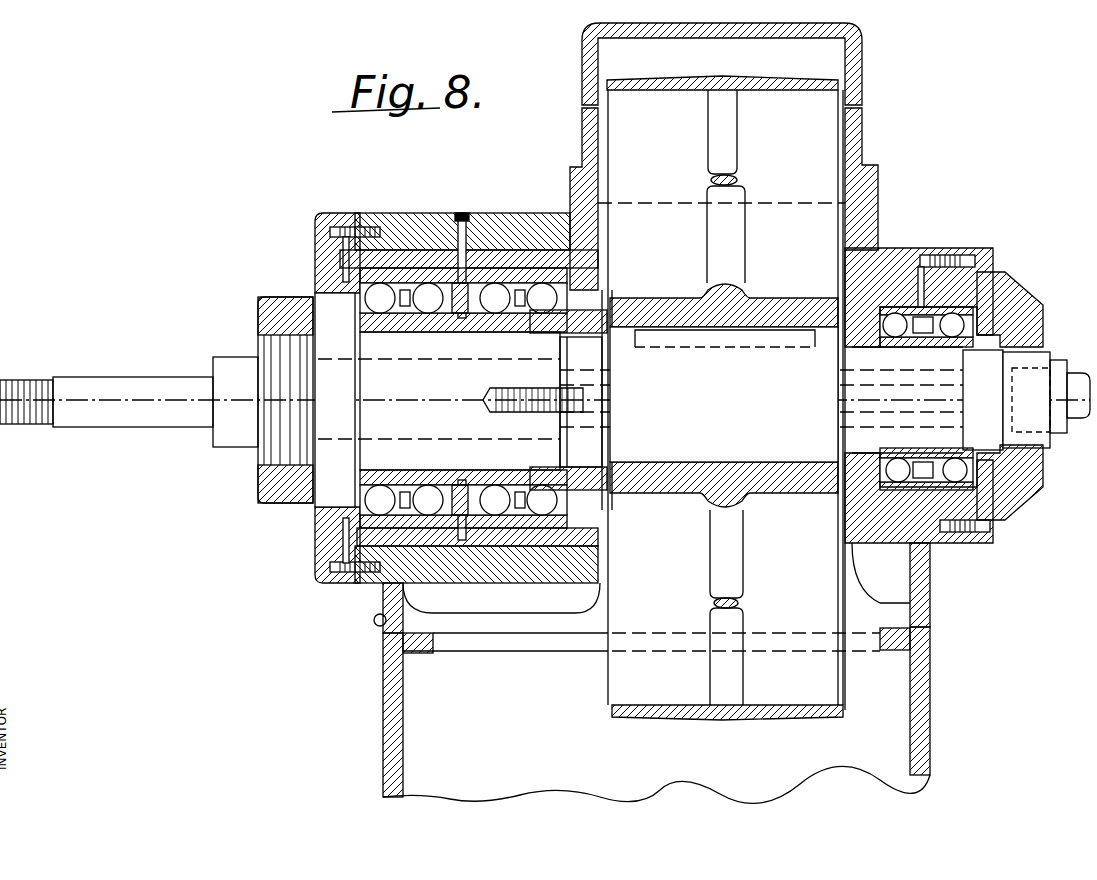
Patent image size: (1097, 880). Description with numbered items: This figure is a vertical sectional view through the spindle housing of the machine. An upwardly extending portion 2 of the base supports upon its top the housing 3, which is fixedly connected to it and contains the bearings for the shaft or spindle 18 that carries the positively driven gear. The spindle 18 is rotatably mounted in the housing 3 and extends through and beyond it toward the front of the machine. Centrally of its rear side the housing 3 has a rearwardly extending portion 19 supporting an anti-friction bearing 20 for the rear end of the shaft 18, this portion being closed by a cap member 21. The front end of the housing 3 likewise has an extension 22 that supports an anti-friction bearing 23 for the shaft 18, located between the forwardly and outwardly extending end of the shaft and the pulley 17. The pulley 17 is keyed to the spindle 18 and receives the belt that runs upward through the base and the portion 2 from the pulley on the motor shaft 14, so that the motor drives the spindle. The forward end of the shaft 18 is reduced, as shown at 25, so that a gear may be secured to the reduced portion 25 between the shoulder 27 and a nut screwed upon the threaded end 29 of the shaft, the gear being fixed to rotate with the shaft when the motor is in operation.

The portion 2 is at (930, 726).
The housing 3 is at (862, 150).
The motor shaft 14 is at (316, 261).
The pulley 17 is at (630, 677).
The shaft or spindle 18 is at (704, 400).
The rearwardly extending portion 19 is at (900, 250).
The anti-friction bearing 20 is at (912, 398).
The cap member 21 is at (1026, 296).
The extension 22 is at (500, 216).
The anti-friction bearing 23 is at (486, 331).
The reduced portion 25 is at (150, 382).
The shoulder 27 is at (214, 360).
The threaded end 29 is at (37, 382).